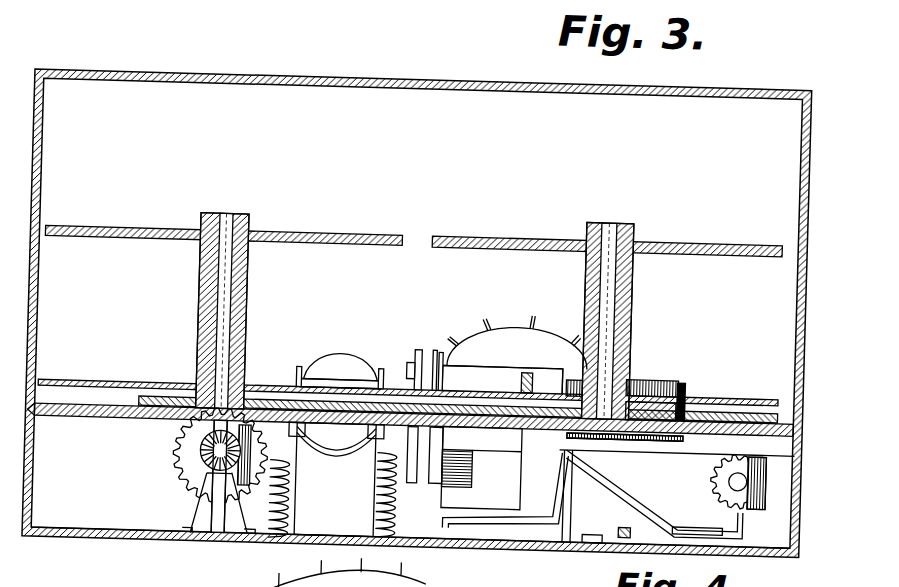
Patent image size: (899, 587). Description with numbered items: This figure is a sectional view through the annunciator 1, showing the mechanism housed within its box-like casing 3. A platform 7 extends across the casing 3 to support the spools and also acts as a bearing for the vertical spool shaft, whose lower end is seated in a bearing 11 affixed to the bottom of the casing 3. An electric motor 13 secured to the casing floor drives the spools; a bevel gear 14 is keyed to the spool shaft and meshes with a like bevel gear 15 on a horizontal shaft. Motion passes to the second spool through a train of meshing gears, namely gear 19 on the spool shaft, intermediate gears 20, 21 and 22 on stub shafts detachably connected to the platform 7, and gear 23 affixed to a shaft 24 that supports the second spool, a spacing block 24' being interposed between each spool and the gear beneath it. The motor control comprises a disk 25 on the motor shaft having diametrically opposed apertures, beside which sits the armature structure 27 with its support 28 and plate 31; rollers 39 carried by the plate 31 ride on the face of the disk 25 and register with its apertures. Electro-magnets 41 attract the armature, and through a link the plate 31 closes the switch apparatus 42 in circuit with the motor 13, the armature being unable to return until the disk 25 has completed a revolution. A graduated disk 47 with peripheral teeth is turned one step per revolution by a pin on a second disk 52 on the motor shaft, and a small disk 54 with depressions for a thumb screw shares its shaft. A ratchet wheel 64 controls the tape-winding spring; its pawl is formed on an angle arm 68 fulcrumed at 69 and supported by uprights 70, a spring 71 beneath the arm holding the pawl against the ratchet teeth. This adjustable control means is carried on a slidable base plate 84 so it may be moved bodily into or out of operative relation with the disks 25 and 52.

The annunciator 1 is at (64, 476).
The casing 3 is at (410, 557).
The platform 7 is at (409, 436).
The bearing 11 is at (181, 463).
The electric motor 13 is at (341, 354).
The bevel gear 14 is at (195, 455).
The bevel gear 15 is at (190, 458).
The gear 19 is at (408, 381).
The intermediate gear 20 is at (296, 362).
The intermediate gear 21 is at (389, 363).
The intermediate gear 22 is at (451, 321).
The gear 23 is at (624, 322).
The shaft 24 is at (421, 316).
The spacing block or disk 24' is at (459, 378).
The disk 25 is at (422, 347).
The armature structure 27 is at (433, 286).
The support 28 is at (481, 468).
The plate 31 is at (445, 336).
The rollers 39 is at (425, 474).
The electro-magnets 41 is at (698, 390).
The switch apparatus 42 is at (472, 433).
The graduated disk 47 is at (514, 318).
The disk 52 is at (400, 336).
The small disk 54 is at (510, 287).
The ratchet wheel 64 is at (763, 522).
The angle arm 68 is at (654, 494).
The fulcrum 69 is at (677, 454).
The uprights 70 is at (559, 433).
The spring 71 is at (670, 446).
The base plate 84 is at (582, 560).